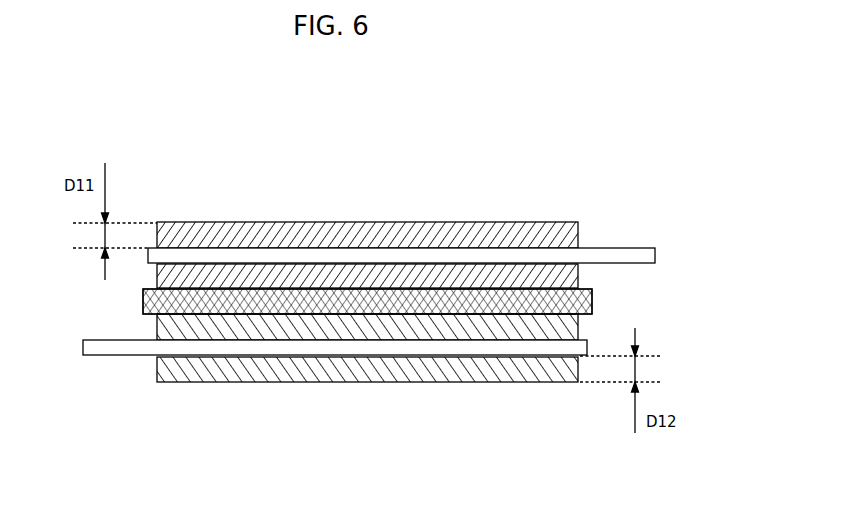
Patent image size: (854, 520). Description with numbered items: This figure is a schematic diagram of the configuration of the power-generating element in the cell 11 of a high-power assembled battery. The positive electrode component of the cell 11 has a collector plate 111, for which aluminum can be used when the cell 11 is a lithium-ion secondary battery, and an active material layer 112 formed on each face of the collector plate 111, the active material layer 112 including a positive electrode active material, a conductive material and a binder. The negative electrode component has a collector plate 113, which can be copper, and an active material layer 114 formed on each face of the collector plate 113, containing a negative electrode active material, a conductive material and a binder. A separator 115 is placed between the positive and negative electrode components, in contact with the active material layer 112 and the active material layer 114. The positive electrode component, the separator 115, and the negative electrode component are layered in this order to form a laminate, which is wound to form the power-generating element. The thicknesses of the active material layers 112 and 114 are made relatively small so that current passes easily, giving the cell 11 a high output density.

The cell 11 is at (694, 181).
The collector plate 111 is at (619, 256).
The active material layer 112 is at (345, 278).
The collector plate 113 is at (121, 345).
The active material layer 114 is at (415, 328).
The separator 115 is at (592, 301).